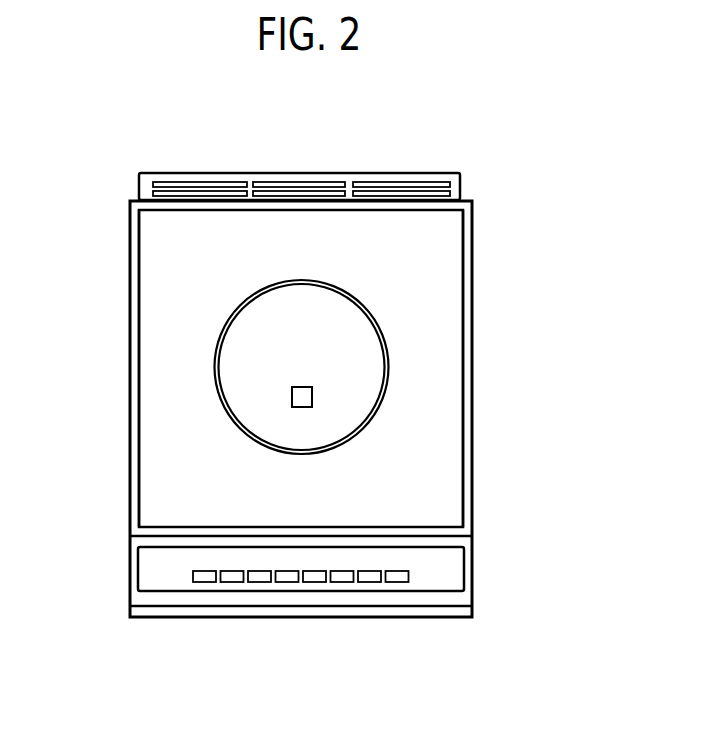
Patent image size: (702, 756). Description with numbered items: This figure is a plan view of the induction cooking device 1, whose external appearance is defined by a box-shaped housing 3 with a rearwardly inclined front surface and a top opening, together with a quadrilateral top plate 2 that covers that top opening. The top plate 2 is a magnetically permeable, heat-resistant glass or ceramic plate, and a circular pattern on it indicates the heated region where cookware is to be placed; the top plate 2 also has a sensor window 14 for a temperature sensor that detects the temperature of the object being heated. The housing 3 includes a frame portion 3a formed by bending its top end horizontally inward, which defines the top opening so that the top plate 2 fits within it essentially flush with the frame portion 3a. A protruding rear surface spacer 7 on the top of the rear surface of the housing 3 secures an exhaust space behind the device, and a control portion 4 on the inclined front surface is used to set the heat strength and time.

The induction cooking device 1 is at (405, 143).
The top plate 2 is at (438, 376).
The housing 3 is at (465, 422).
The frame portion 3a is at (135, 302).
The control portion 4 is at (442, 578).
The rear surface spacer 7 is at (462, 187).
The sensor window 14 is at (302, 396).